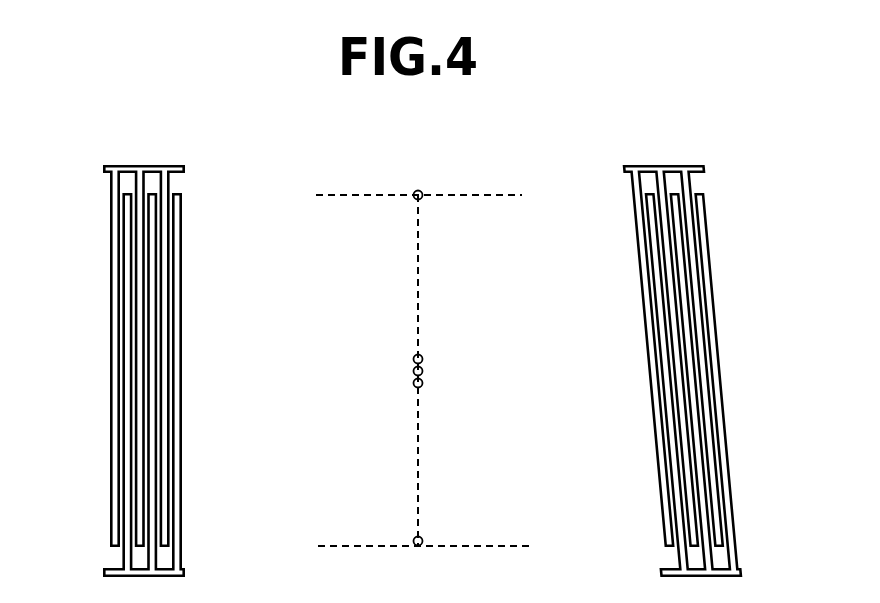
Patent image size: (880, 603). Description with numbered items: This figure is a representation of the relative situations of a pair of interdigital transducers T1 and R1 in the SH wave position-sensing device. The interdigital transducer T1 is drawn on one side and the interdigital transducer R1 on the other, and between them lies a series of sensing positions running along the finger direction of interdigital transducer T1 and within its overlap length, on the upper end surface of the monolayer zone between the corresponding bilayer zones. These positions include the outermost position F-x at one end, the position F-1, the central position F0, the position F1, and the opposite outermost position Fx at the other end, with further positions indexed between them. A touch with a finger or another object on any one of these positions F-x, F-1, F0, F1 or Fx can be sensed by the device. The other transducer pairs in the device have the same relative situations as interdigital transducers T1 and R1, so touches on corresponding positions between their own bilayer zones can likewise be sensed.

The interdigital transducer T1 is at (105, 370).
The interdigital transducer R1 is at (717, 370).
The position F-x is at (419, 200).
The position F-1 is at (414, 355).
The position F0 is at (422, 370).
The position F1 is at (415, 387).
The position Fx is at (422, 536).